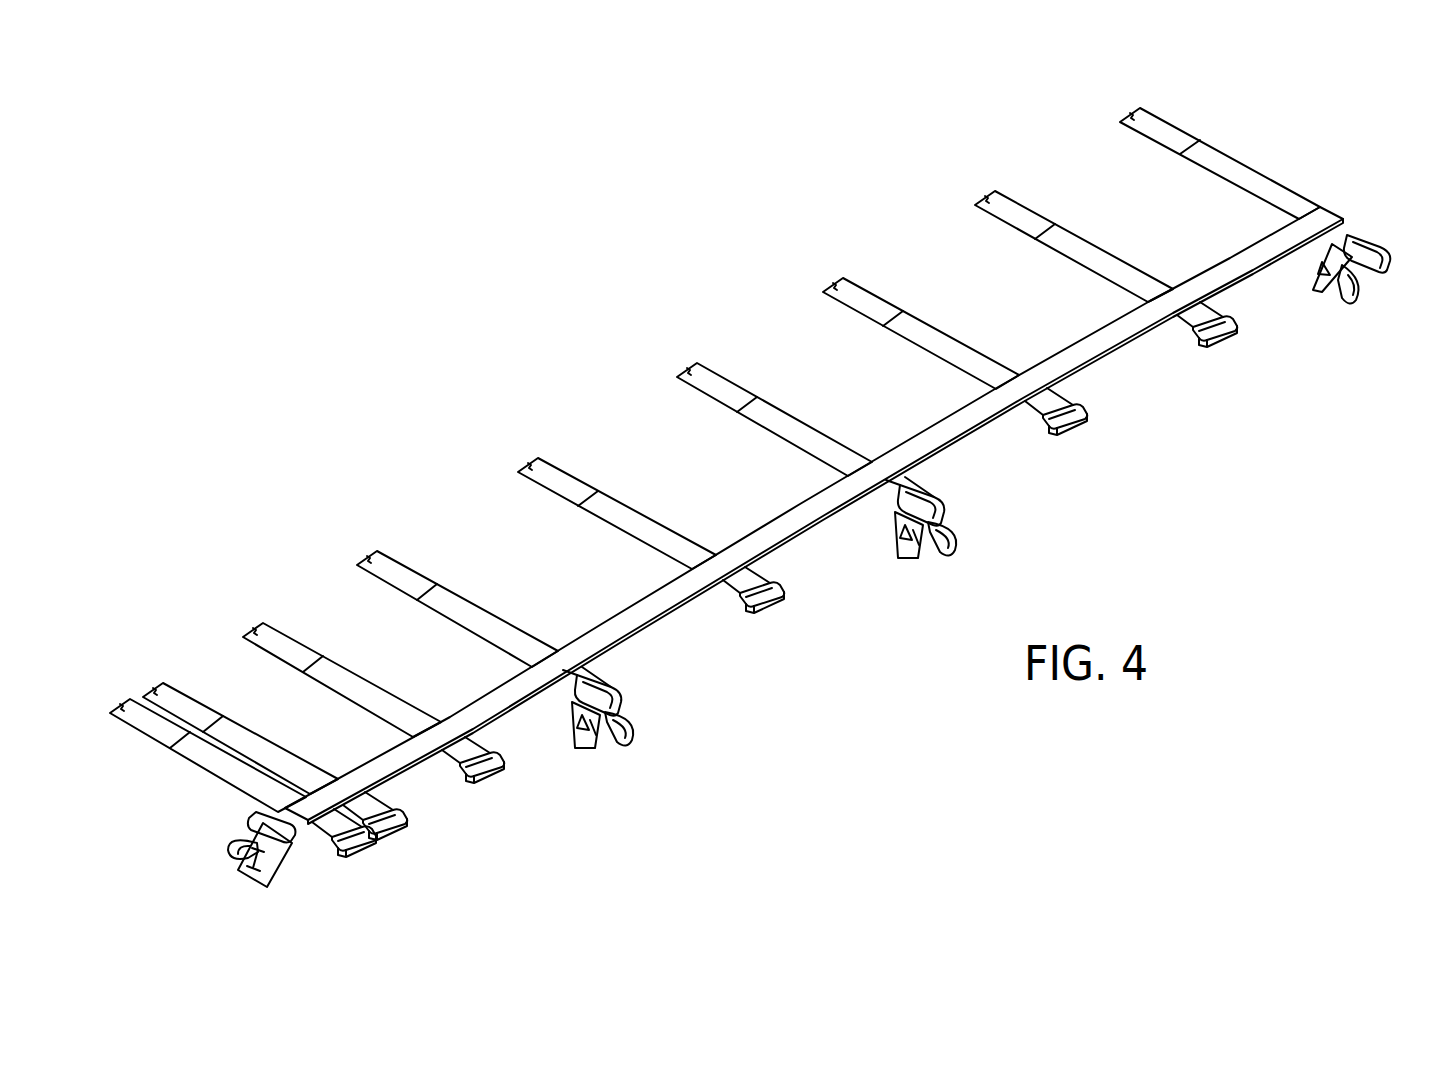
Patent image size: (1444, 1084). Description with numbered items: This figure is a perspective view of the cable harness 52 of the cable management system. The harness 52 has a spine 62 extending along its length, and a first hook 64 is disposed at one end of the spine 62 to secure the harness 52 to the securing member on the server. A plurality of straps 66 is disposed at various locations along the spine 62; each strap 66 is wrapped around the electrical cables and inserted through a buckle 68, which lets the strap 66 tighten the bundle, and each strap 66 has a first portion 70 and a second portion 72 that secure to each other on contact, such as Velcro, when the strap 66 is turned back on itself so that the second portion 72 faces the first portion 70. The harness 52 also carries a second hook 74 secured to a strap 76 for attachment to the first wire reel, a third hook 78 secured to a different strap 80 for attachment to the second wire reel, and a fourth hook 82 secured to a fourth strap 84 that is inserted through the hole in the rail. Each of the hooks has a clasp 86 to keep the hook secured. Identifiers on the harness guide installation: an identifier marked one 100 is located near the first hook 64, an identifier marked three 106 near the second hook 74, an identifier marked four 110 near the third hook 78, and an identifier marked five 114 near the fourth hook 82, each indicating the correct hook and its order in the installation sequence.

The cable harness 52 is at (735, 240).
The spine 62 is at (810, 517).
The first hook 64 is at (230, 856).
The straps 66 is at (1090, 281).
The buckle 68 is at (1075, 445).
The first portion 70 is at (935, 362).
The second portion 72 is at (1005, 212).
The second hook 74 is at (640, 733).
The strap 76 is at (503, 620).
The third hook 78 is at (940, 527).
The strap 80 is at (797, 419).
The fourth hook 82 is at (1356, 300).
The fourth strap 84 is at (1265, 186).
The clasp 86 is at (600, 752).
The second identifier marked "1" 100 is at (270, 858).
The second identifier marked "3" 106 is at (583, 730).
The second identifier marked "4" 110 is at (915, 555).
The second identifier marked "5" 114 is at (1315, 275).